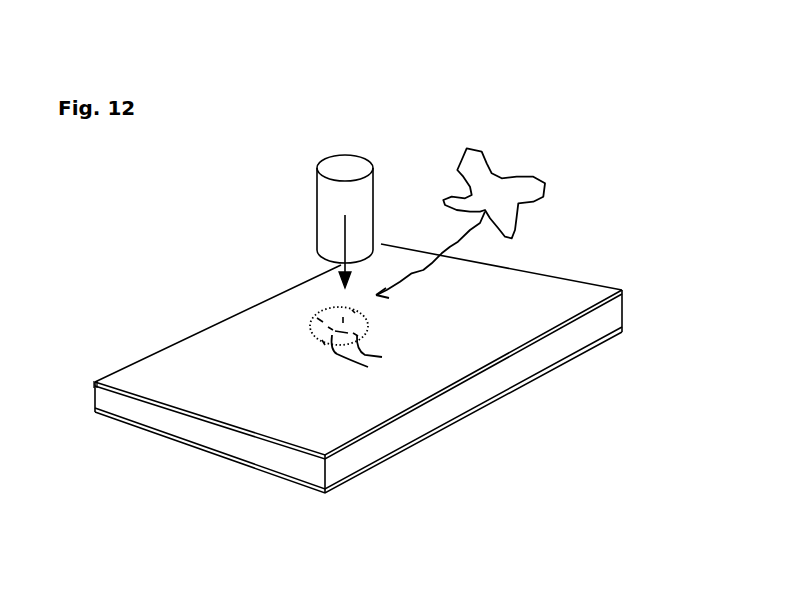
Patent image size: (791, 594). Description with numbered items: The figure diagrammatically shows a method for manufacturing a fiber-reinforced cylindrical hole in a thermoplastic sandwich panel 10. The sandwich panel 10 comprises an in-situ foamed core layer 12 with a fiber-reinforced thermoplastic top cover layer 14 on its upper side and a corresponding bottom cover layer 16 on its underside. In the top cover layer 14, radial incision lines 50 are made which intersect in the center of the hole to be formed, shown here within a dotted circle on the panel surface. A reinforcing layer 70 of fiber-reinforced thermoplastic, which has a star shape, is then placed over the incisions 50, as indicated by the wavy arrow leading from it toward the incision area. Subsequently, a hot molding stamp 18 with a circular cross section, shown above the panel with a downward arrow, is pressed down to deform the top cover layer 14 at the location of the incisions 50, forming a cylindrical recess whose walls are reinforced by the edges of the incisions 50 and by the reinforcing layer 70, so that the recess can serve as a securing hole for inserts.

The sandwich panel 10 is at (206, 307).
The core layer 12 is at (157, 415).
The top cover layer 14 is at (135, 396).
The bottom cover layer 16 is at (210, 452).
The molding stamp 18 is at (332, 200).
The incision lines 50 is at (367, 341).
The reinforcing layer 70 is at (513, 193).